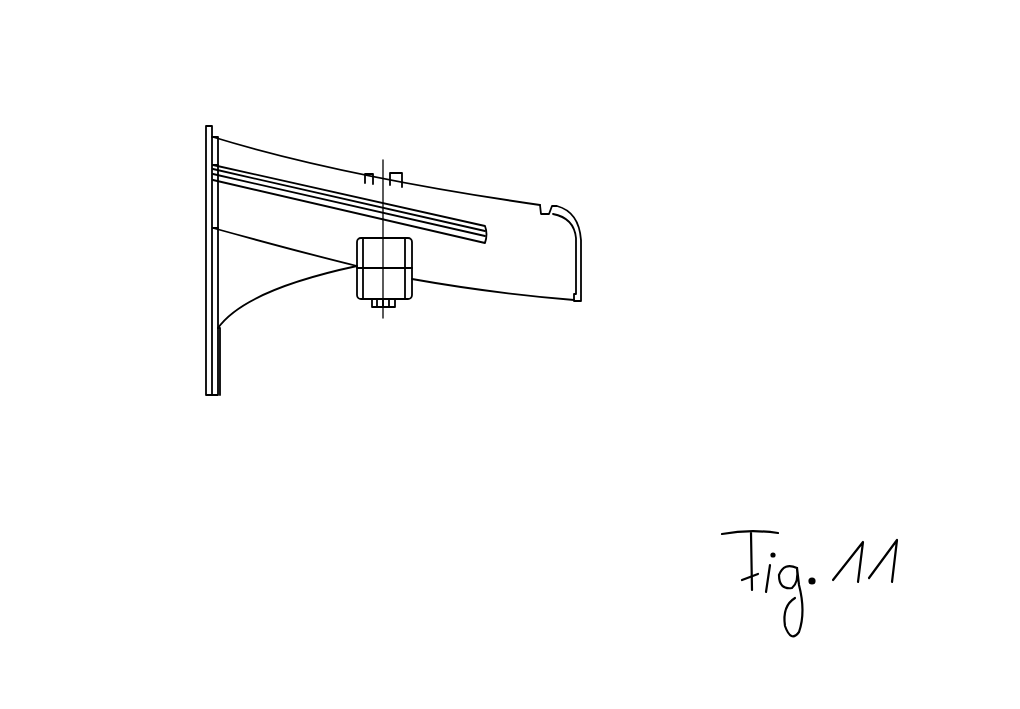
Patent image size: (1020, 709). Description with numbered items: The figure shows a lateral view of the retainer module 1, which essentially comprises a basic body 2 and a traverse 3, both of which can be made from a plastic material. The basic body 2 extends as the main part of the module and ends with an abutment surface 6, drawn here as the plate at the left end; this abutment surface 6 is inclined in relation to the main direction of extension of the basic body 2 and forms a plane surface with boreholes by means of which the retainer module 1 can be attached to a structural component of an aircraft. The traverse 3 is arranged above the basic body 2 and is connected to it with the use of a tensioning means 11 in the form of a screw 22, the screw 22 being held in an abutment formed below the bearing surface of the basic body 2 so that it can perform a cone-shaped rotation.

The retainer module 1 is at (867, 273).
The basic body 2 is at (555, 101).
The traverse 3 is at (449, 31).
The abutment surface 6 is at (207, 370).
The tensioning means 11 is at (393, 305).
The screw 22 is at (577, 382).